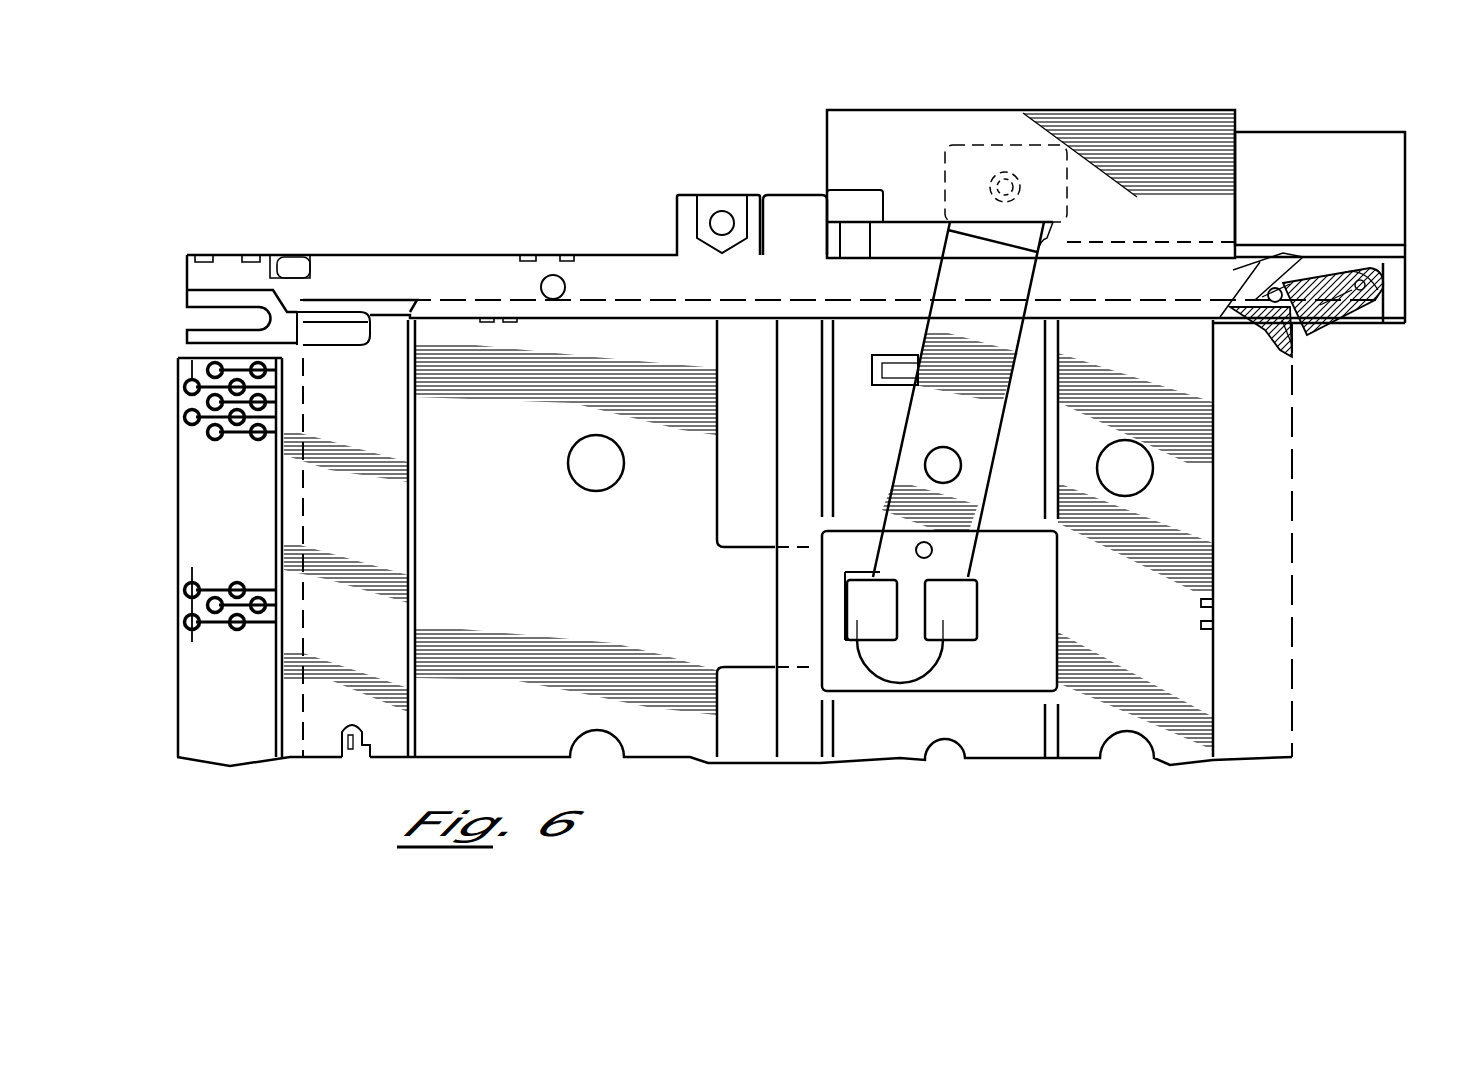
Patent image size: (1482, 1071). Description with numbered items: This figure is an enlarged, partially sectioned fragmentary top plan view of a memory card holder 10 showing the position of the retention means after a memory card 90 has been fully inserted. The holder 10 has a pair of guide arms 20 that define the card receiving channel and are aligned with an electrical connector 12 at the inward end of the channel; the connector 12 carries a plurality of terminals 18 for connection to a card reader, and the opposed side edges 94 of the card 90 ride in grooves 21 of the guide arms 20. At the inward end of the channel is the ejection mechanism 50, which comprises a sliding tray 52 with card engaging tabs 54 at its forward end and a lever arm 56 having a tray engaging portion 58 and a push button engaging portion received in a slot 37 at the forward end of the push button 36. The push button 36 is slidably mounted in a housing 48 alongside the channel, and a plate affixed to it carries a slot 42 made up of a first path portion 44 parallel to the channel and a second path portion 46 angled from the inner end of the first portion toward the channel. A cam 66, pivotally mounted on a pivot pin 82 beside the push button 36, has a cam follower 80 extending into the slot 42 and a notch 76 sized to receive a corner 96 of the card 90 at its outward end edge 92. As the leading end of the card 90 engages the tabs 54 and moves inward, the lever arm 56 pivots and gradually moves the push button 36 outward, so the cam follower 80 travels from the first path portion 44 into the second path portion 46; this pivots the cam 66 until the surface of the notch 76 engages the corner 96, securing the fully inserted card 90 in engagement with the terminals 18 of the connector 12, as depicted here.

The memory card holder 10 is at (416, 192).
The electrical connector 12 is at (335, 520).
The terminals 18 is at (250, 420).
The guide arms 20 is at (553, 228).
The grooves 21 is at (650, 300).
The push button 36 is at (1410, 152).
The slot 37 is at (957, 150).
The slot 42 is at (1325, 268).
The first path portion 44 is at (1370, 266).
The second path portion 46 is at (1282, 285).
The housing 48 is at (1083, 108).
The ejection mechanism 50 is at (983, 605).
The sliding tray 52 is at (540, 572).
The card engaging tabs 54 is at (327, 330).
The lever arm 56 is at (972, 427).
The tray engaging portion 58 is at (900, 690).
The cam 66 is at (1347, 310).
The notch 76 is at (1253, 339).
The cam follower 80 is at (1270, 292).
The pivot pin 82 is at (1366, 286).
The memory card 90 is at (1300, 528).
The outward end edge 92 is at (1293, 626).
The side edges 94 is at (705, 300).
The corner 96 is at (1290, 340).